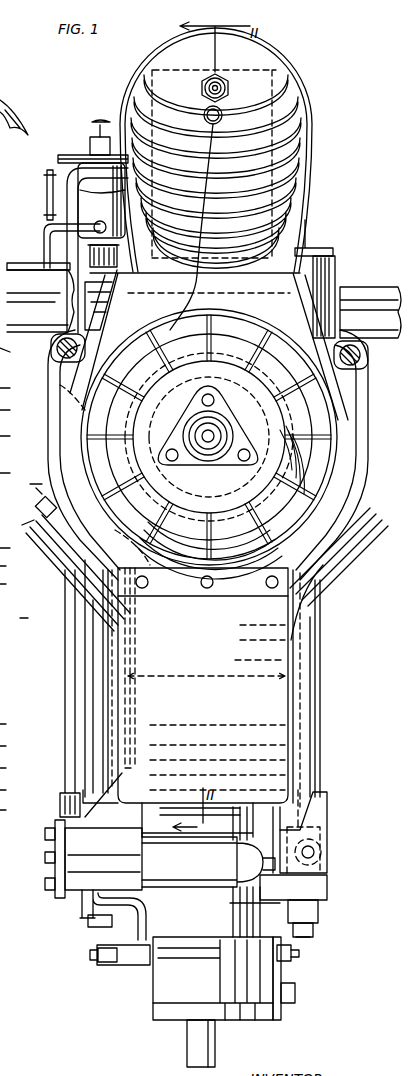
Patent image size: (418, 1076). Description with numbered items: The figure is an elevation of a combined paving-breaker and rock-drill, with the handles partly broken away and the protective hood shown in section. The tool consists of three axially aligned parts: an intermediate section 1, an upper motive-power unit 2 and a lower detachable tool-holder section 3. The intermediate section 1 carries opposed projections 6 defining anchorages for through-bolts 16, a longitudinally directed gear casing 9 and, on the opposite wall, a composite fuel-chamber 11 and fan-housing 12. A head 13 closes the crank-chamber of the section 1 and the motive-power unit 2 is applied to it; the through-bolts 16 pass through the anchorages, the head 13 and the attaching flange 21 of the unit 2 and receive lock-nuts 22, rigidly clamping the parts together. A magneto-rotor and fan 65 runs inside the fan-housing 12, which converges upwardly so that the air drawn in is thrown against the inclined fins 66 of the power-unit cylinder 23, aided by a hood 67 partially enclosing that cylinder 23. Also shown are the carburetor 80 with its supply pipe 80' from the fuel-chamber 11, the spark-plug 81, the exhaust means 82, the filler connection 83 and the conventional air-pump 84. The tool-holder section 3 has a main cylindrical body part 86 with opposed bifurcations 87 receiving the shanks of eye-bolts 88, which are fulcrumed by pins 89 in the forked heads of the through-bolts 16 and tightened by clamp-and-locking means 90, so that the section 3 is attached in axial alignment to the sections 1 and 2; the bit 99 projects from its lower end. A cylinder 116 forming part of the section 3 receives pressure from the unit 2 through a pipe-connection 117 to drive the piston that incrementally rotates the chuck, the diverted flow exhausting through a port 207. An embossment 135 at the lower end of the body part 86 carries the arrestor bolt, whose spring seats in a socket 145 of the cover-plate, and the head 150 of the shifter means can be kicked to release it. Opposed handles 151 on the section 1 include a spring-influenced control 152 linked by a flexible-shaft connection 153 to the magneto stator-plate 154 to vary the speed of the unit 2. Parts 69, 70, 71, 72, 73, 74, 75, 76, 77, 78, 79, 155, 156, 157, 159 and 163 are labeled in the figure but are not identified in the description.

The intermediate section 1 is at (385, 543).
The motive-power unit 2 is at (338, 45).
The tool-holder section 3 is at (352, 1035).
The opposed projections 6 is at (338, 792).
The gear casing 9 is at (0, 602).
The fuel-chamber 11 is at (203, 685).
The fan-housing 12 is at (342, 460).
The head 13 is at (352, 314).
The through-bolts 16 is at (97, 692).
The attaching flange 21 is at (112, 288).
The lock-nuts 22 is at (345, 246).
The cylinder 23 is at (304, 160).
The magneto-rotor and fan 65 is at (278, 342).
The inclined fins 66 is at (302, 118).
The hood 67 is at (152, 63).
The pipe 69 is at (7, 438).
The pipe 70 is at (7, 412).
The pipe 71 is at (6, 353).
The pipe 72 is at (7, 390).
The pipe 73 is at (14, 548).
The pipe 74 is at (10, 567).
The pipe 75 is at (0, 880).
The pipe 76 is at (19, 527).
The pipe 77 is at (13, 548).
The pipe 78 is at (7, 585).
The valve 79 is at (30, 501).
The carburetor 80 is at (86, 226).
The supply pipe 80' is at (97, 426).
The spark-plug 81 is at (232, 88).
The exhaust means 82 is at (14, 130).
The filler connection 83 is at (345, 572).
The air-pump 84 is at (78, 573).
The main cylindrical body part 86 is at (162, 992).
The bifurcations 87 is at (320, 885).
The eye-bolts 88 is at (320, 906).
The pins 89 is at (316, 853).
The clamp-and-locking means 90 is at (316, 926).
The bit 99 is at (184, 1038).
The cylinder 116 is at (160, 859).
The pipe-connection 117 is at (66, 720).
The embossment 135 is at (265, 977).
The socket 145 is at (292, 997).
The head 150 is at (299, 954).
The handles 151 is at (204, 304).
The control 152 is at (22, 265).
The flexible-shaft connection 153 is at (128, 538).
The magneto stator-plate 154 is at (152, 438).
The pipe 155 is at (12, 770).
The pipe 156 is at (12, 726).
The pipe 157 is at (12, 792).
The pipe 159 is at (12, 748).
The pipe 163 is at (15, 812).
The port 207 is at (92, 908).